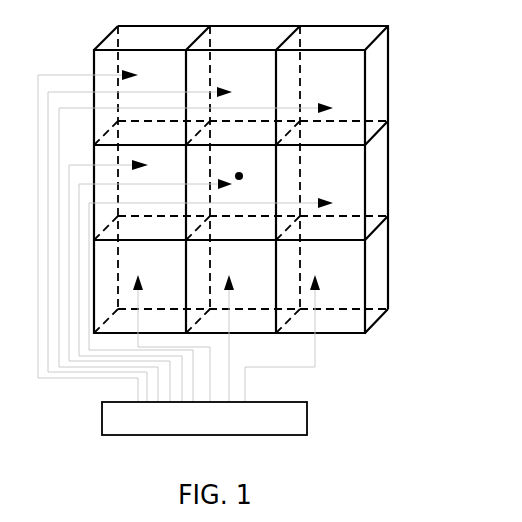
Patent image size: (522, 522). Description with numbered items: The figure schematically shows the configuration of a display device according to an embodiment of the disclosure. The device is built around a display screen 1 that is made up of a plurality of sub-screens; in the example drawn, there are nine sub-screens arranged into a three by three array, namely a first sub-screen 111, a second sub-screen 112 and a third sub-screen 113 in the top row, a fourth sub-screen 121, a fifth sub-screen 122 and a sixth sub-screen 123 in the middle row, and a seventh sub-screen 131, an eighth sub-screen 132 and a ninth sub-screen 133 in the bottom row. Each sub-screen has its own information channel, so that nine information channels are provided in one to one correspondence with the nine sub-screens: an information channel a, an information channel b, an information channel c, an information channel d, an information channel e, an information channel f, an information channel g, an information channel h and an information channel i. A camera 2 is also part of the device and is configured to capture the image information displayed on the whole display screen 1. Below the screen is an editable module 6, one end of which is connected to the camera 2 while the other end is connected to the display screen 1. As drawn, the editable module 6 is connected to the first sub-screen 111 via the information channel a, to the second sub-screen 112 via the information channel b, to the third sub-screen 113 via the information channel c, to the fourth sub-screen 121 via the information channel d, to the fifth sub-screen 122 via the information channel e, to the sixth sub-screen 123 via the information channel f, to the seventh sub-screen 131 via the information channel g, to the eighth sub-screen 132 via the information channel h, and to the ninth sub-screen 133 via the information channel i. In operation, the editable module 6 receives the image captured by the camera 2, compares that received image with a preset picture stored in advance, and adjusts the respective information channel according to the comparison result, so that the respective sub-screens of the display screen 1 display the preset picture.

The display screen 1 is at (378, 183).
The camera 2 is at (243, 180).
The editable module 6 is at (307, 423).
The first sub-screen 111 is at (107, 241).
The second sub-screen 112 is at (151, 241).
The third sub-screen 113 is at (184, 232).
The fourth sub-screen 121 is at (98, 280).
The fifth sub-screen 122 is at (132, 279).
The sixth sub-screen 123 is at (178, 279).
The seventh sub-screen 131 is at (230, 331).
The eighth sub-screen 132 is at (275, 331).
The ninth sub-screen 133 is at (288, 334).
The information channel a is at (93, 373).
The information channel b is at (55, 378).
The information channel c is at (59, 318).
The information channel d is at (69, 295).
The information channel e is at (79, 263).
The information channel f is at (89, 243).
The information channel g is at (211, 370).
The information channel h is at (230, 342).
The information channel i is at (246, 385).